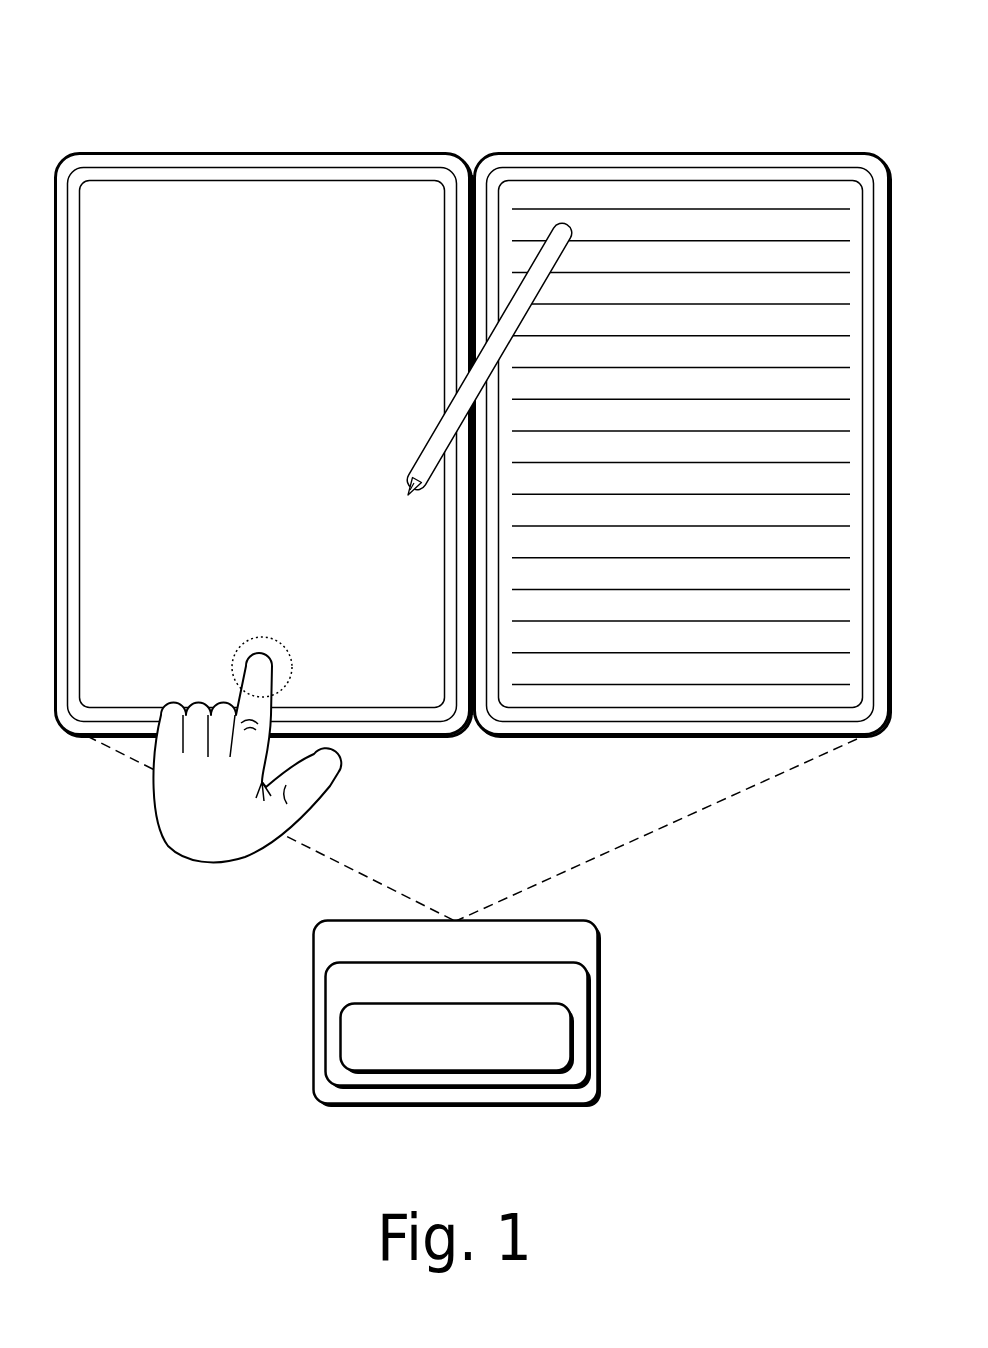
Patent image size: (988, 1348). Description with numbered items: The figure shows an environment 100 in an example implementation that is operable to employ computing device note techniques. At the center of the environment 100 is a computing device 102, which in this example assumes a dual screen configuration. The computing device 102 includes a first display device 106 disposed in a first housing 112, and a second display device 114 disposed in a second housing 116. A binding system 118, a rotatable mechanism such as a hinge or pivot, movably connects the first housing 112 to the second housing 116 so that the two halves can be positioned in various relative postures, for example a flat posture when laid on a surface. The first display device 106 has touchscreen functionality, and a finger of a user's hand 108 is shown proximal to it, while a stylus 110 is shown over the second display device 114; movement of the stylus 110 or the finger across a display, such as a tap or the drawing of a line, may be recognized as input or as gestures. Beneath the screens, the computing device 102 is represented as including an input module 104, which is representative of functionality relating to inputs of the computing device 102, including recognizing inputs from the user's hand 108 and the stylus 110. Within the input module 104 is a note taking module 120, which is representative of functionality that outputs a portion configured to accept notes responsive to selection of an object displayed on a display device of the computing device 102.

The environment 100 is at (141, 50).
The computing device 102 is at (568, 952).
The input module 104 is at (542, 994).
The first display device 106 is at (212, 180).
The user's hand 108 is at (222, 814).
The stylus 110 is at (563, 233).
The first housing 112 is at (340, 151).
The second display device 114 is at (647, 180).
The second housing 116 is at (774, 150).
The binding system 118 is at (473, 166).
The note taking module 120 is at (513, 1062).